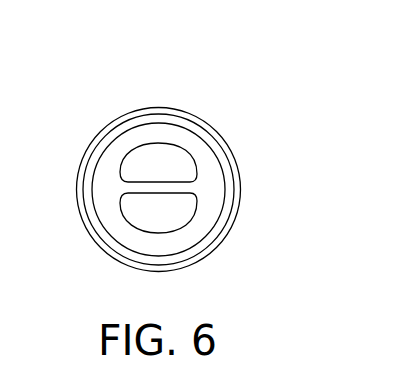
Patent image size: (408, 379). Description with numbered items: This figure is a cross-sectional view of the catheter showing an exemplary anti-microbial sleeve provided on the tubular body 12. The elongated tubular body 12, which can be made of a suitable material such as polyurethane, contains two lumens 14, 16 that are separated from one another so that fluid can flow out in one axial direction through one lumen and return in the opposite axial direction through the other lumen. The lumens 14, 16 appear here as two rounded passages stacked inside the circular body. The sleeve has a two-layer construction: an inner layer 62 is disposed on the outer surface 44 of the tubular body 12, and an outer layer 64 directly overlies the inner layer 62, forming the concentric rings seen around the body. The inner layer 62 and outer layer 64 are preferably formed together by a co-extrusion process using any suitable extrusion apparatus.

The tubular body 12 is at (227, 87).
The lumen 14 is at (138, 171).
The lumen 16 is at (138, 216).
The outer surface 44 is at (210, 232).
The inner layer 62 is at (225, 153).
The outer layer 64 is at (159, 107).